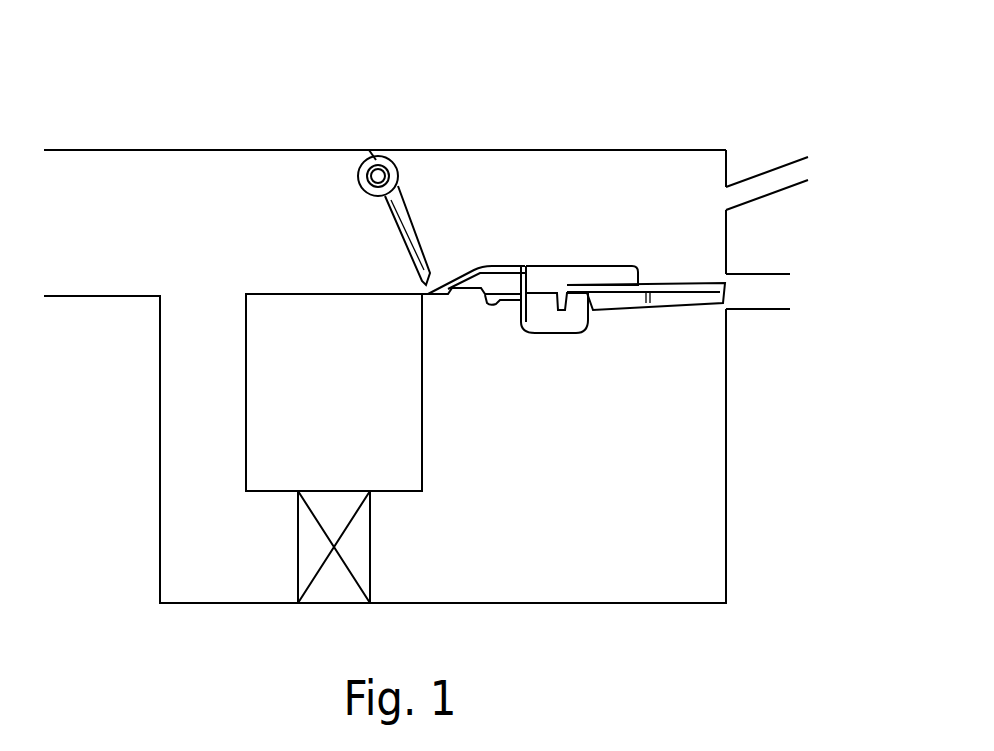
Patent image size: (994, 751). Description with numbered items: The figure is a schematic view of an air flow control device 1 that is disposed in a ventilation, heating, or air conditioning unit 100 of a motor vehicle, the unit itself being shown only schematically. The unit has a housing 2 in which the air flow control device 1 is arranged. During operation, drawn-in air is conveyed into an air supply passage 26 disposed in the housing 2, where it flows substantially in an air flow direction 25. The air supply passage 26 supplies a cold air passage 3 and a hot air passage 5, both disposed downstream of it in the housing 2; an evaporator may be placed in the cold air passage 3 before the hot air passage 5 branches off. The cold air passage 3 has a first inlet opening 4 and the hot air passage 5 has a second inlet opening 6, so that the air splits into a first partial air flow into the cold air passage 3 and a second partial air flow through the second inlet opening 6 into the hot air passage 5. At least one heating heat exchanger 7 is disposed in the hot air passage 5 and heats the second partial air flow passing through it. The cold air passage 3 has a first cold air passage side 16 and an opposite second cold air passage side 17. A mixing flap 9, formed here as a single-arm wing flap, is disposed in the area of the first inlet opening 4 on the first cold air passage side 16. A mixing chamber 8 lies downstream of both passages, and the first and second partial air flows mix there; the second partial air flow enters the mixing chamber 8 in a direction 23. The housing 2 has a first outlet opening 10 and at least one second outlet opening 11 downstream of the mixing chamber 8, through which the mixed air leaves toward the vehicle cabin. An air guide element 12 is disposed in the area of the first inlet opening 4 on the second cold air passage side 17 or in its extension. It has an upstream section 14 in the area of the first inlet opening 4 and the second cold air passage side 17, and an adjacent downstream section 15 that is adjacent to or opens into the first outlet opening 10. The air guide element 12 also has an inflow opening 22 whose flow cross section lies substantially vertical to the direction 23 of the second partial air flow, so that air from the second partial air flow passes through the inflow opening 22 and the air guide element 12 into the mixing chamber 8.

The air flow control device 1 is at (138, 92).
The ventilation, heating, or air conditioning unit 100 is at (760, 93).
The housing 2 is at (95, 150).
The cold air passage 3 is at (333, 182).
The first inlet opening 4 is at (222, 187).
The hot air passage 5 is at (203, 497).
The second inlet opening 6 is at (203, 327).
The heating heat exchanger 7 is at (370, 548).
The mixing chamber 8 is at (503, 190).
The mixing flap 9 is at (418, 250).
The first outlet opening 10 is at (732, 293).
The second outlet opening 11 is at (730, 203).
The air guide element 12 is at (545, 268).
The upstream section 14 is at (507, 310).
The downstream section 15 is at (605, 267).
The first cold air passage side 16 is at (293, 150).
The second cold air passage side 17 is at (418, 295).
The inflow opening 22 is at (628, 300).
The direction of the second partial air flow 23 is at (637, 263).
The air flow direction 25 is at (245, 246).
The air supply passage 26 is at (80, 243).